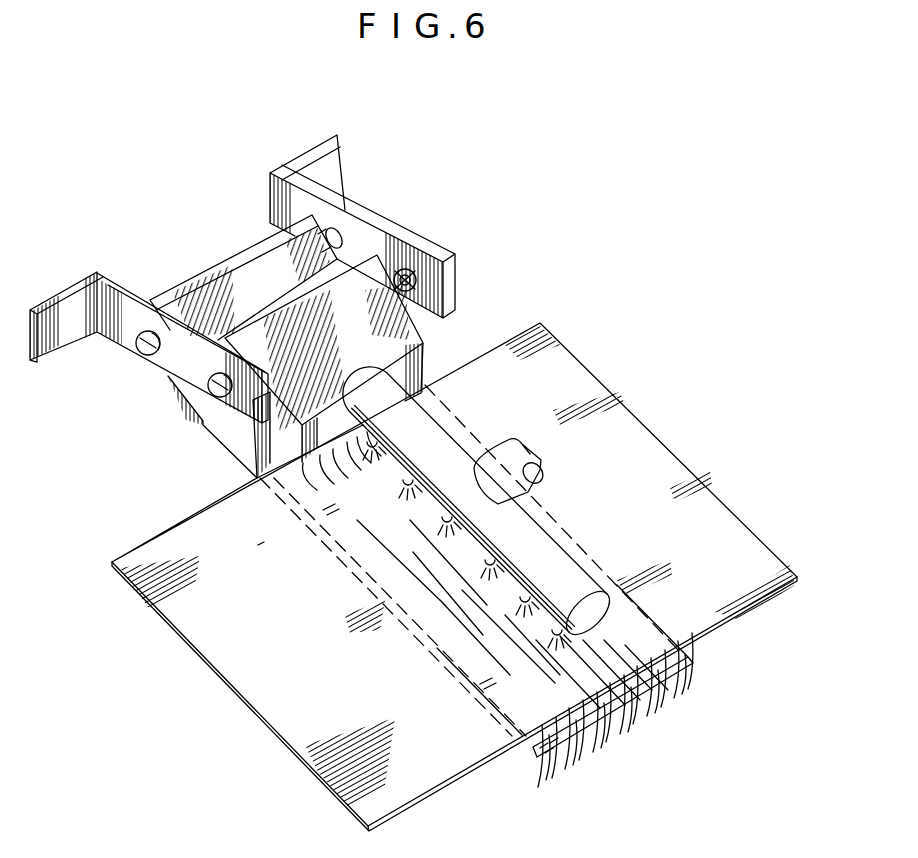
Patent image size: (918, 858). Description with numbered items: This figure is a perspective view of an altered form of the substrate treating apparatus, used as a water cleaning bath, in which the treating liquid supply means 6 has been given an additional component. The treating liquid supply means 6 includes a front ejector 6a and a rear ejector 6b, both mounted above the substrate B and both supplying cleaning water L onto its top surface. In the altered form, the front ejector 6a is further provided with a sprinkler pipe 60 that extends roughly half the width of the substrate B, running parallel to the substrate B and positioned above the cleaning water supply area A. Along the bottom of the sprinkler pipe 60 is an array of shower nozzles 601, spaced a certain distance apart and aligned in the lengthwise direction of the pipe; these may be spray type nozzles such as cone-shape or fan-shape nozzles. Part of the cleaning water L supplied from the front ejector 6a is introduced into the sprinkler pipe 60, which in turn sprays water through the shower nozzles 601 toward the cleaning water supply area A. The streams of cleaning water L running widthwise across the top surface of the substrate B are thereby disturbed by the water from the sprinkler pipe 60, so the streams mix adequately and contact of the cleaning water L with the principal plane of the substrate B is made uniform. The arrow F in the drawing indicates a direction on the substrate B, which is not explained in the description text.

The treating liquid supply means 6 is at (547, 190).
The front ejector 6a is at (400, 342).
The rear ejector 6b is at (340, 248).
The sprinkler pipe 60 is at (553, 560).
The shower nozzles 601 is at (523, 597).
The cleaning water supply area A is at (404, 544).
The cleaning water L is at (367, 532).
The substrate B is at (268, 720).
The feed direction F is at (677, 428).